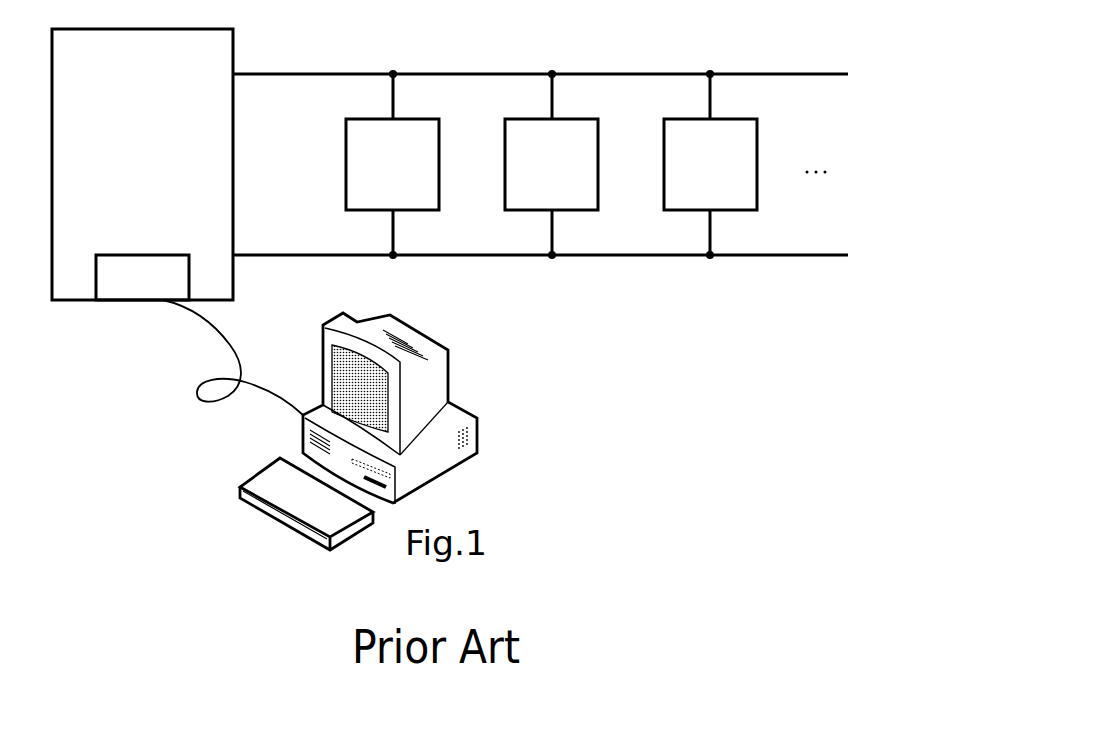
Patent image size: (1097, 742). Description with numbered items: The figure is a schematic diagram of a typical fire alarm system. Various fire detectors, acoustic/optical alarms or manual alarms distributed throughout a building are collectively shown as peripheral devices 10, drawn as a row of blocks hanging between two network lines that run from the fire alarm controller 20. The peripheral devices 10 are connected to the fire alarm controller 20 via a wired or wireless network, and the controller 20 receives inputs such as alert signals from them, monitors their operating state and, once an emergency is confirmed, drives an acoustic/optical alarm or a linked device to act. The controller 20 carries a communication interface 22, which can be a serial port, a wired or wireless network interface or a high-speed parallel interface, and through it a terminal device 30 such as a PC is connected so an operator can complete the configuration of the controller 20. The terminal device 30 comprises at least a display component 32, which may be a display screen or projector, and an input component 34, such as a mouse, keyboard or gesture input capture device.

The peripheral devices 10 is at (379, 176).
The fire alarm controller 20 is at (156, 175).
The communication interface 22 is at (158, 290).
The terminal device 30 is at (442, 387).
The display component 32 is at (375, 398).
The input component 34 is at (314, 506).